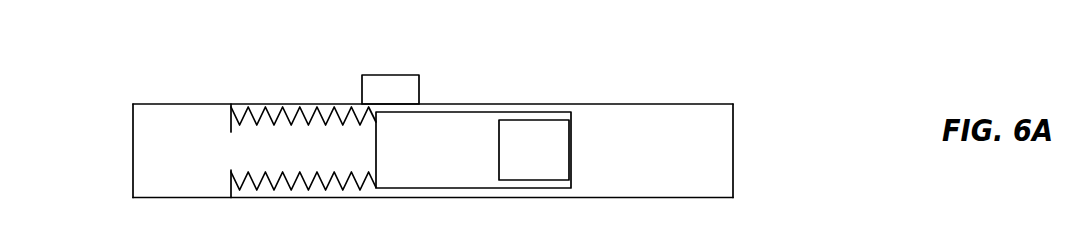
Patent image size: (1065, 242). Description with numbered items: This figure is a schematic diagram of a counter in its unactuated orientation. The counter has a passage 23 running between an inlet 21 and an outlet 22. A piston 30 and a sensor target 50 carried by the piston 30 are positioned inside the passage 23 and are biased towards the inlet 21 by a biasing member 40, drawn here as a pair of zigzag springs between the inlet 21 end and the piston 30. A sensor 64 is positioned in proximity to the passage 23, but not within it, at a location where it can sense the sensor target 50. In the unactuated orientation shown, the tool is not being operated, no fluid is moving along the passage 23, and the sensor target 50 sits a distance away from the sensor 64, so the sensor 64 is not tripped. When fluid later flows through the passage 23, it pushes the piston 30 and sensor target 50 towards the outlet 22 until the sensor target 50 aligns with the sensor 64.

The inlet 21 is at (734, 136).
The outlet 22 is at (132, 129).
The passage 23 is at (647, 125).
The piston 30 is at (452, 123).
The biasing member 40 is at (275, 107).
The sensor target 50 is at (543, 136).
The sensor 64 is at (384, 87).